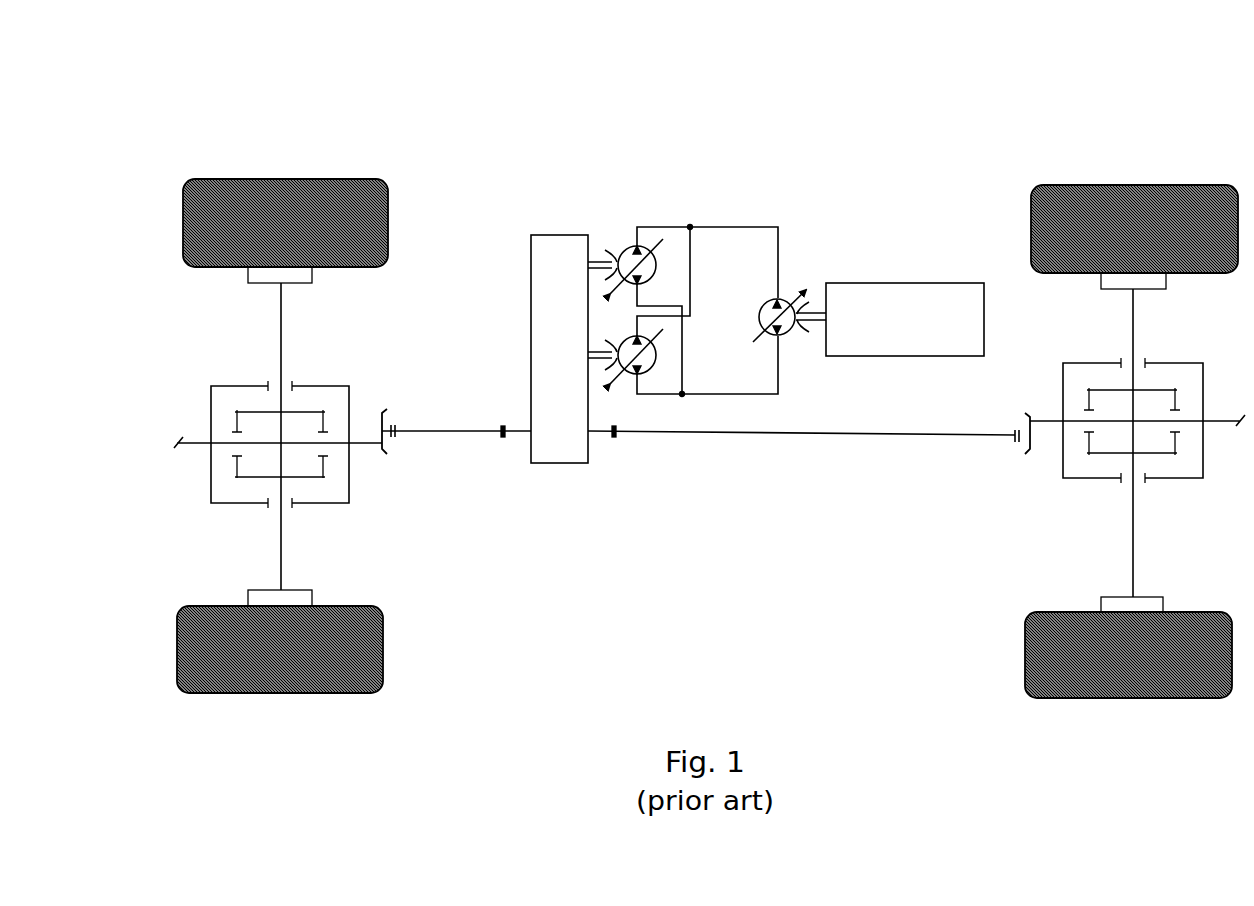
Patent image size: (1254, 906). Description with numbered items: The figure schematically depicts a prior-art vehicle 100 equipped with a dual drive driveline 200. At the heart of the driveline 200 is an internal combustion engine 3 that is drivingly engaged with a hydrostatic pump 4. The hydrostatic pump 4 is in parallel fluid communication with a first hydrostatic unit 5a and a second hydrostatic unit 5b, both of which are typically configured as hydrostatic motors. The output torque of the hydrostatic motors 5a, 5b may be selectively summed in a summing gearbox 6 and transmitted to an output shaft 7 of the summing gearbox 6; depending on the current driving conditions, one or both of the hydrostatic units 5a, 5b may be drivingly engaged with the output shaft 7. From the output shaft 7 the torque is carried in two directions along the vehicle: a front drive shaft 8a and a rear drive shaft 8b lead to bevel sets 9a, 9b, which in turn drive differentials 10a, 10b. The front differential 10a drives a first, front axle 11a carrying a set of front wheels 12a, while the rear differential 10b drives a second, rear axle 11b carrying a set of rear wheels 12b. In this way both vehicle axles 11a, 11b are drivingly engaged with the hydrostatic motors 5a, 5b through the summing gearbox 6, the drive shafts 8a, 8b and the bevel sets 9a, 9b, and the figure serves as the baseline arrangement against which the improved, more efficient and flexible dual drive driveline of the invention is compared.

The vehicle 100 is at (396, 84).
The dual drive driveline 200 is at (834, 193).
The internal combustion engine 3 is at (933, 283).
The hydrostatic pump 4 is at (791, 340).
The first hydrostatic unit 5a is at (617, 245).
The second hydrostatic unit 5b is at (629, 380).
The summing gearbox 6 is at (527, 258).
The output shaft 7 is at (604, 437).
The drive shaft 8a is at (458, 434).
The drive shaft 8b is at (833, 437).
The bevel set 9a is at (398, 403).
The bevel set 9b is at (1021, 462).
The differential 10a is at (328, 503).
The differential 10b is at (1088, 480).
The first (front) axle 11a is at (278, 522).
The second (rear) axle 11b is at (1133, 524).
The front wheels 12a is at (233, 179).
The rear wheels 12b is at (1115, 185).